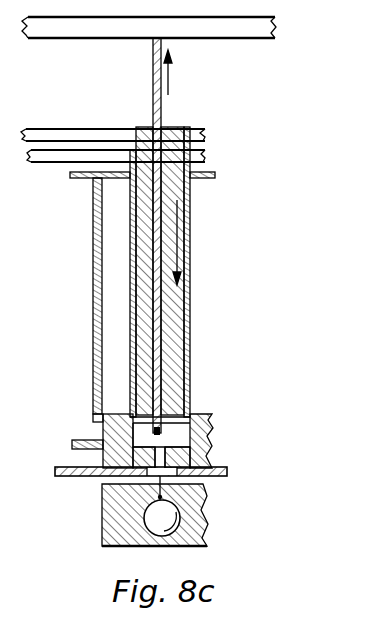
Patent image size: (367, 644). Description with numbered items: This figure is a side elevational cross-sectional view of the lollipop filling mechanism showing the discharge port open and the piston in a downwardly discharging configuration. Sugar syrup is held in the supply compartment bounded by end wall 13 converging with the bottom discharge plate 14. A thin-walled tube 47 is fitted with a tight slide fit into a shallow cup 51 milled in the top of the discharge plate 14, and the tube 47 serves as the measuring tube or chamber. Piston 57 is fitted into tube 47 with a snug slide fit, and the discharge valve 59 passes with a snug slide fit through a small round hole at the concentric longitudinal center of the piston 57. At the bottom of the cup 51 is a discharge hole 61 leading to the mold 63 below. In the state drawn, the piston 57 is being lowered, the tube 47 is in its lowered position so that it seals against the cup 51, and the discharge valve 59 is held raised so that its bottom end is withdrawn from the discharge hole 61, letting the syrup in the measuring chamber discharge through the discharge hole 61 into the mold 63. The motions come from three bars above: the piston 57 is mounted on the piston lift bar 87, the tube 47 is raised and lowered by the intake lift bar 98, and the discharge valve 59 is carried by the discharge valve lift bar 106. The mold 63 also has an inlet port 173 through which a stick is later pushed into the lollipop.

The discharge valve lift bar 106 is at (228, 40).
The piston lift bar 87 is at (62, 127).
The intake lift bar 98 is at (47, 163).
The discharge valve 59 is at (161, 190).
The piston 57 is at (175, 310).
The thin-walled tube 47 is at (190, 365).
The end wall 13 is at (93, 322).
The discharge plate 14 is at (103, 430).
The shallow cup 51 is at (195, 430).
The discharge hole 61 is at (163, 458).
The inlet port 173 is at (158, 500).
The mold 63 is at (102, 534).